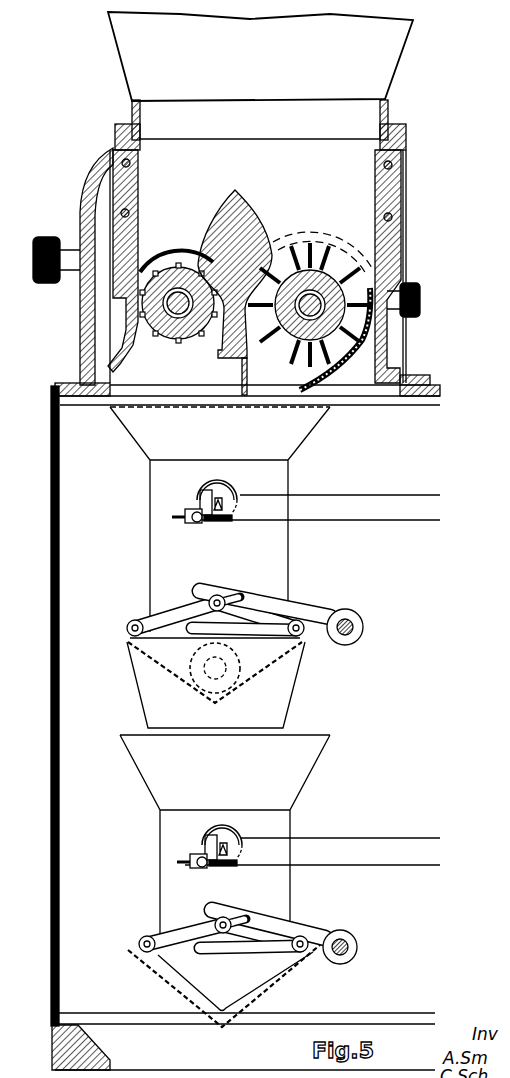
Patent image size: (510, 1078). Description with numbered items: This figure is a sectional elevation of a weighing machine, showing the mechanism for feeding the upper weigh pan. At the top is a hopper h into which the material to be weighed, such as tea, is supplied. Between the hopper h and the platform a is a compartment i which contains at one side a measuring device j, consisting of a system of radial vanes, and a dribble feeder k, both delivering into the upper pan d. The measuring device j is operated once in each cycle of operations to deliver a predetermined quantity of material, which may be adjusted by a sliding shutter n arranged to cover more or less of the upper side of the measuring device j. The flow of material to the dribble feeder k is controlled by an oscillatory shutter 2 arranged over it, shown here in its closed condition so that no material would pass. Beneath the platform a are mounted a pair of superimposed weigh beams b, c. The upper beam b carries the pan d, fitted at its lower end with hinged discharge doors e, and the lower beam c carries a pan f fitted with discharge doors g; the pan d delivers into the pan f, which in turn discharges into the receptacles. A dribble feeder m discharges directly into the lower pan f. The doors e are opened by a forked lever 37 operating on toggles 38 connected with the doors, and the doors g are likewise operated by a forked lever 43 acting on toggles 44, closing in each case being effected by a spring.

The hopper h is at (260, 56).
The compartment i is at (368, 178).
The oscillatory shutter 2 is at (176, 258).
The dribble feeder k is at (208, 335).
The measuring device j is at (338, 262).
The sliding shutter n is at (303, 242).
The platform a is at (432, 388).
The pan d is at (160, 552).
The weigh beam b is at (390, 507).
The forked lever 37 is at (248, 590).
The toggles 38 is at (180, 610).
The hinged discharge doors e is at (178, 672).
The dribble feeder m is at (243, 682).
The pan f is at (163, 875).
The weigh beam c is at (340, 858).
The forked lever 43 is at (258, 915).
The toggles 44 is at (190, 930).
The discharge doors g is at (195, 1002).